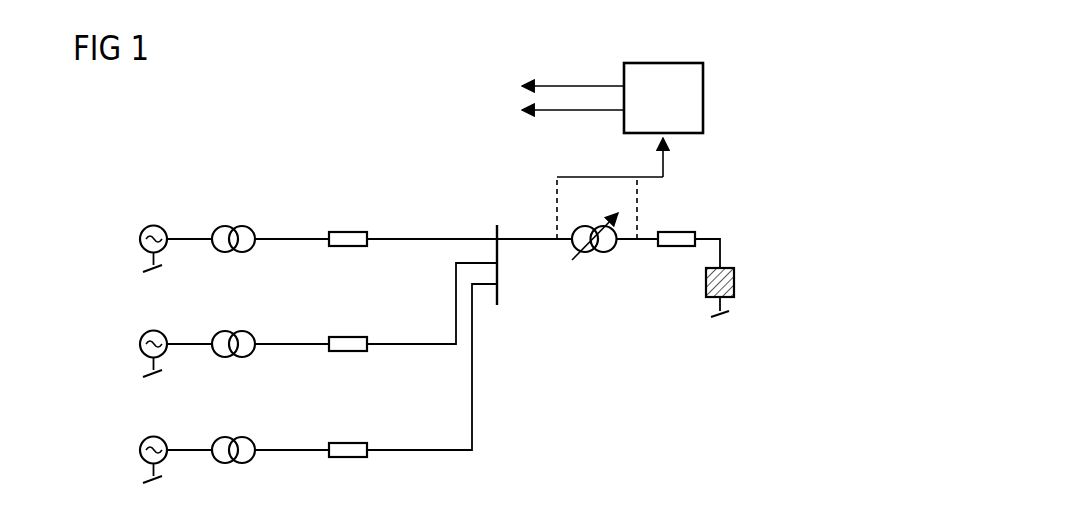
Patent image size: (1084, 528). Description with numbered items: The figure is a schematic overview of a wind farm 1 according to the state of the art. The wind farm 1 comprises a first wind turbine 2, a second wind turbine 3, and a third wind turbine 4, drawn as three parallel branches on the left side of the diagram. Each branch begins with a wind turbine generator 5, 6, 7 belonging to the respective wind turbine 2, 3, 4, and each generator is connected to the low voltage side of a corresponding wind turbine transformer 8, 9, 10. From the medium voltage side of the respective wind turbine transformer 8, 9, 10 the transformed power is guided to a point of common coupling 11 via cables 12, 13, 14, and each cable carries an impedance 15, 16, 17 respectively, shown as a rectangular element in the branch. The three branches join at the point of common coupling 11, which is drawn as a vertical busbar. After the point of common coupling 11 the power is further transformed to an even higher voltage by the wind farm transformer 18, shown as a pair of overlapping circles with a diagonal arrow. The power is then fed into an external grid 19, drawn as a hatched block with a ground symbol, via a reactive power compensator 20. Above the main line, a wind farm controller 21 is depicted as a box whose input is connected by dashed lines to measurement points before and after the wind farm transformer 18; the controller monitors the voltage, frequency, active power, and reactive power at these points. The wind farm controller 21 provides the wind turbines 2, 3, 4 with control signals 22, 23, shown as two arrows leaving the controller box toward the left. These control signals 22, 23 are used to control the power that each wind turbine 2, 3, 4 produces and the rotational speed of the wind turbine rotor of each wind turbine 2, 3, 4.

The wind farm 1 is at (292, 112).
The first wind turbine 2 is at (128, 230).
The second wind turbine 3 is at (128, 335).
The third wind turbine 4 is at (128, 441).
The wind turbine generator 5 is at (154, 224).
The wind turbine generator 6 is at (154, 329).
The wind turbine generator 7 is at (154, 435).
The wind turbine transformer 8 is at (233, 226).
The wind turbine transformer 9 is at (233, 331).
The wind turbine transformer 10 is at (233, 437).
The point of common coupling 11 is at (499, 275).
The cable 12 is at (288, 237).
The cable 13 is at (288, 342).
The cable 14 is at (288, 448).
The impedance 15 is at (348, 232).
The impedance 16 is at (348, 337).
The impedance 17 is at (348, 443).
The wind farm transformer 18 is at (593, 257).
The external grid 19 is at (736, 283).
The reactive power compensator 20 is at (677, 232).
The wind farm controller 21 is at (705, 98).
The control signal 22 is at (570, 83).
The control signal 23 is at (552, 115).